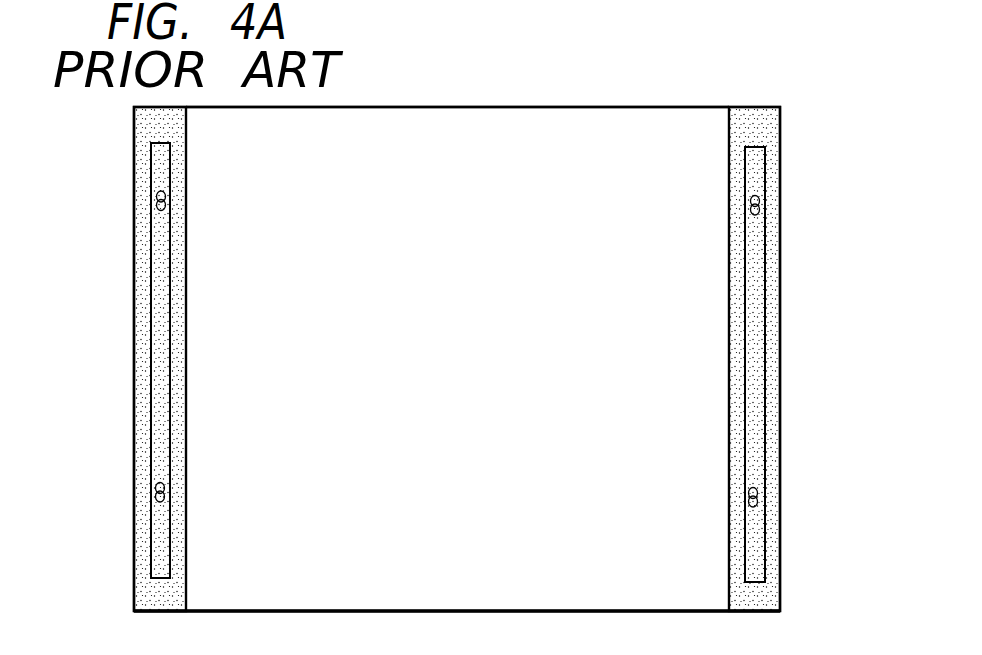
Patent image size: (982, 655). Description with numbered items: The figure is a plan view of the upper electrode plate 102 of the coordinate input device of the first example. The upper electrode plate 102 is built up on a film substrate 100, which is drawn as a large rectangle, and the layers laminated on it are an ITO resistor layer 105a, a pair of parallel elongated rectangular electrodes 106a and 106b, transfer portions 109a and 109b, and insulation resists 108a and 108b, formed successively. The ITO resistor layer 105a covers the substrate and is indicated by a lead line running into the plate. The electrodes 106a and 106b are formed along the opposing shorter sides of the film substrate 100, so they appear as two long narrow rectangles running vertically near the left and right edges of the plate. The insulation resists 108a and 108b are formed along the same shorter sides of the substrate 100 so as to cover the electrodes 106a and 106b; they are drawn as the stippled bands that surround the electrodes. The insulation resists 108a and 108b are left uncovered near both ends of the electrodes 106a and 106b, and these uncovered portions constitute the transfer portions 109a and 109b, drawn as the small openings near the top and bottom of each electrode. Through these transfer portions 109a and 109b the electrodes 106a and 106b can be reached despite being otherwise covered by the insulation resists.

The film substrate 100 is at (778, 588).
The upper electrode plate 102 is at (537, 93).
The ITO resistor layer 105a is at (682, 400).
The electrode 106a is at (158, 343).
The electrode 106b is at (755, 276).
The insulation resist 108a is at (138, 416).
The insulation resist 108b is at (772, 326).
The transfer portion 109a is at (157, 492).
The transfer portion 109b is at (759, 205).